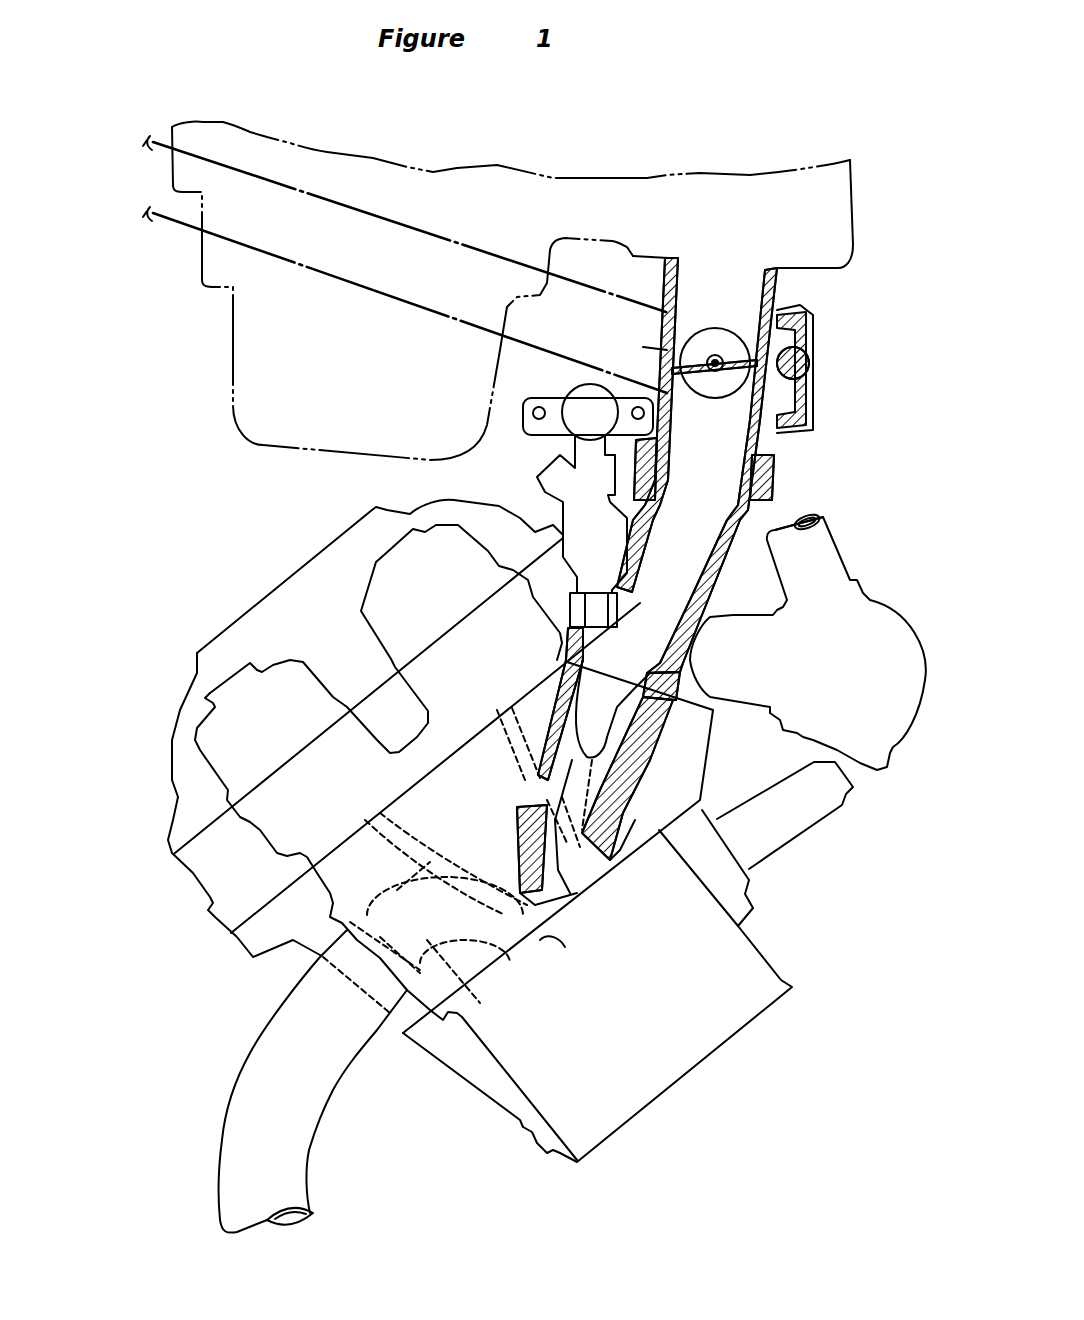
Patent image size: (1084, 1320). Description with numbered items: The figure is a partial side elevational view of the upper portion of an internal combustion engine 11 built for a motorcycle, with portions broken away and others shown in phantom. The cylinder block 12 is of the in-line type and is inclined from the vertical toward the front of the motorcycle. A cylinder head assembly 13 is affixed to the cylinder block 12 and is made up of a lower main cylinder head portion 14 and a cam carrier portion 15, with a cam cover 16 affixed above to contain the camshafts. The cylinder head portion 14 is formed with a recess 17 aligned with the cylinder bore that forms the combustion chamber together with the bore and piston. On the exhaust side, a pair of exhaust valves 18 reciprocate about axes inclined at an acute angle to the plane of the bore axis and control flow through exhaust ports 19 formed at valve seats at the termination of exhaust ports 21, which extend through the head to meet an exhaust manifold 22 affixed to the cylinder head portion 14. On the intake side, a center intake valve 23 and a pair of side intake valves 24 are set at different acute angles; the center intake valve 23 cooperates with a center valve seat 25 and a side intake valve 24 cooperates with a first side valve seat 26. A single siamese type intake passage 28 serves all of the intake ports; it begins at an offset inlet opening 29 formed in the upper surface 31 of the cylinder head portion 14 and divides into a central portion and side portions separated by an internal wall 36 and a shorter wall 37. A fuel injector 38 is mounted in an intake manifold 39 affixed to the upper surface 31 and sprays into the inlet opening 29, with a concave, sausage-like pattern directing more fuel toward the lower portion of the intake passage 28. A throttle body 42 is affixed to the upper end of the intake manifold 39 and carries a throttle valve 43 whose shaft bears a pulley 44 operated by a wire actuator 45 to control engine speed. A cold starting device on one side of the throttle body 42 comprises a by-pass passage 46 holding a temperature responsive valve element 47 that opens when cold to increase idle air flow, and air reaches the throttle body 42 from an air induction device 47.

The internal combustion engine 11 is at (207, 580).
The cylinder block 12 is at (553, 1103).
The cylinder head assembly 13 is at (107, 953).
The cylinder head portion 14 is at (240, 947).
The cam carrier portion 15 is at (217, 917).
The cam cover 16 is at (184, 778).
The recess 17 is at (613, 943).
The exhaust valve 18 is at (513, 938).
The exhaust port 19 is at (523, 960).
The exhaust port 21 is at (460, 970).
The exhaust manifold 22 is at (313, 1140).
The center intake valve 23 is at (567, 883).
The side intake valve 24 is at (590, 910).
The center valve seat 25 is at (610, 867).
The first side valve seat 26 is at (520, 850).
The intake passage 28 is at (553, 707).
The inlet opening 29 is at (658, 702).
The upper surface 31 is at (703, 693).
The internal wall 36 is at (637, 748).
The wall 37 is at (660, 808).
The fuel injector 38 is at (540, 458).
The intake manifold 39 is at (730, 582).
The throttle body 42 is at (823, 362).
The throttle valve 43 is at (634, 346).
The pulley 44 is at (730, 338).
The wire actuator 45 is at (443, 238).
The by-pass passage 46 is at (815, 350).
The temperature responsive valve element 47 is at (853, 240).